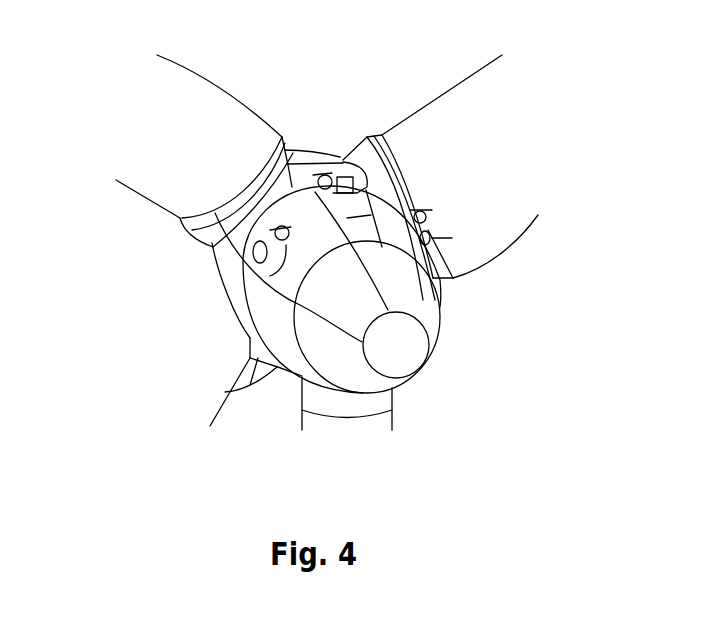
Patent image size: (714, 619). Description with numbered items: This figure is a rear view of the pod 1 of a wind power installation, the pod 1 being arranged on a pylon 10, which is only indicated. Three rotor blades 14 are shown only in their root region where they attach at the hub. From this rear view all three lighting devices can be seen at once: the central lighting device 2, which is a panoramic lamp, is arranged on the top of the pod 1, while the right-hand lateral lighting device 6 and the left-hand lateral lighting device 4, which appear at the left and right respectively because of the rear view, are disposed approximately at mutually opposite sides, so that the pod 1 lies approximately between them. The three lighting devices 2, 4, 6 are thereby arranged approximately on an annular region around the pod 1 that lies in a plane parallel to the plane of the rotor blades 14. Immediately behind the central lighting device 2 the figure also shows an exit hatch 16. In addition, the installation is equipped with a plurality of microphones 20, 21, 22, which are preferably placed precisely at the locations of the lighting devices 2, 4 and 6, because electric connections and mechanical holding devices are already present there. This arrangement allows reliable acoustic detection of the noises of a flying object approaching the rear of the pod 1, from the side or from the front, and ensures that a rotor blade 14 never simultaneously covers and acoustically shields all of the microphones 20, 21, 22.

The pod 1 is at (458, 342).
The central lighting device 2 is at (331, 151).
The left-hand lateral lighting device 4 is at (452, 238).
The right-hand lateral lighting device 6 is at (255, 250).
The pylon 10 is at (393, 417).
The rotor blades 14 is at (149, 171).
The exit hatch 16 is at (343, 160).
The microphone 20 is at (288, 152).
The microphone 21 is at (432, 210).
The microphone 22 is at (270, 276).